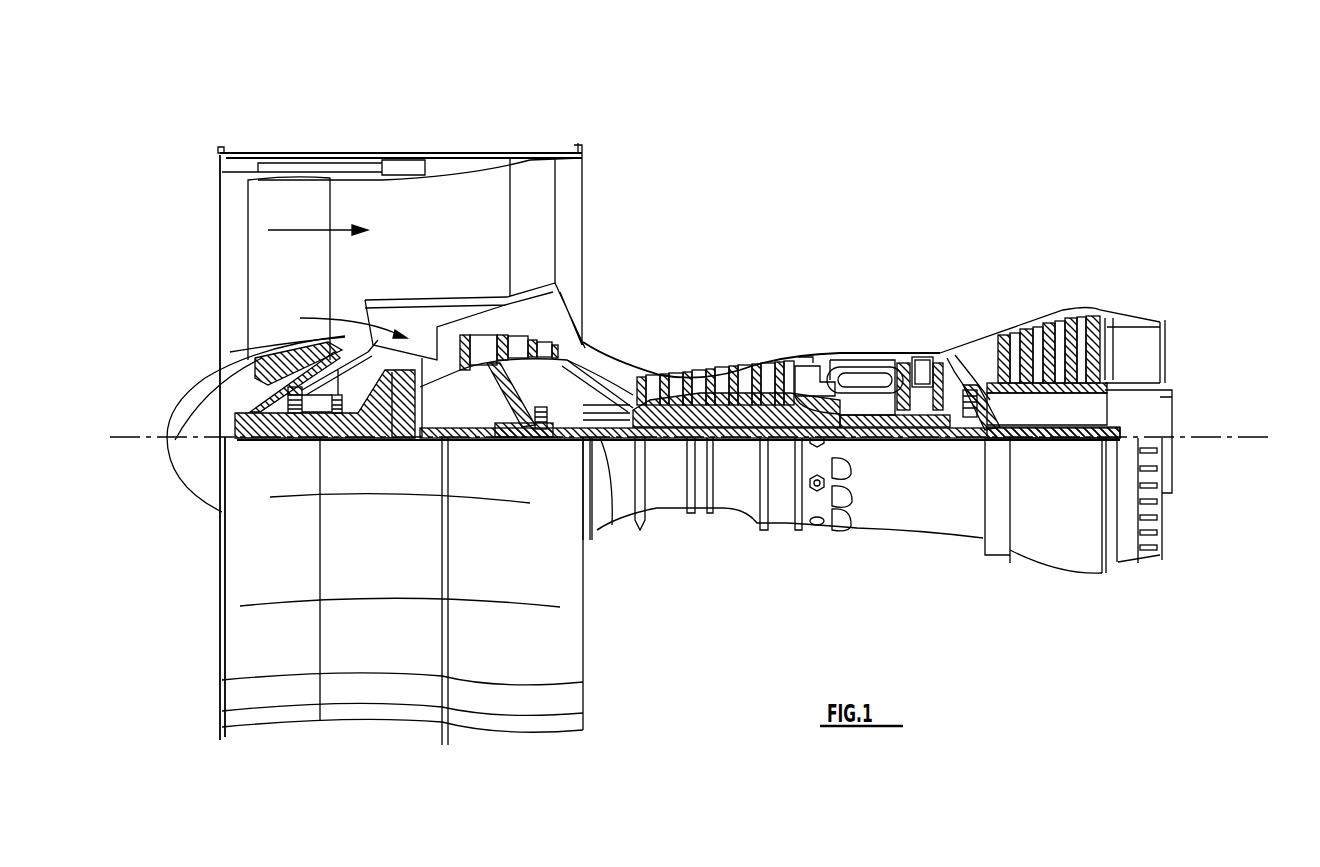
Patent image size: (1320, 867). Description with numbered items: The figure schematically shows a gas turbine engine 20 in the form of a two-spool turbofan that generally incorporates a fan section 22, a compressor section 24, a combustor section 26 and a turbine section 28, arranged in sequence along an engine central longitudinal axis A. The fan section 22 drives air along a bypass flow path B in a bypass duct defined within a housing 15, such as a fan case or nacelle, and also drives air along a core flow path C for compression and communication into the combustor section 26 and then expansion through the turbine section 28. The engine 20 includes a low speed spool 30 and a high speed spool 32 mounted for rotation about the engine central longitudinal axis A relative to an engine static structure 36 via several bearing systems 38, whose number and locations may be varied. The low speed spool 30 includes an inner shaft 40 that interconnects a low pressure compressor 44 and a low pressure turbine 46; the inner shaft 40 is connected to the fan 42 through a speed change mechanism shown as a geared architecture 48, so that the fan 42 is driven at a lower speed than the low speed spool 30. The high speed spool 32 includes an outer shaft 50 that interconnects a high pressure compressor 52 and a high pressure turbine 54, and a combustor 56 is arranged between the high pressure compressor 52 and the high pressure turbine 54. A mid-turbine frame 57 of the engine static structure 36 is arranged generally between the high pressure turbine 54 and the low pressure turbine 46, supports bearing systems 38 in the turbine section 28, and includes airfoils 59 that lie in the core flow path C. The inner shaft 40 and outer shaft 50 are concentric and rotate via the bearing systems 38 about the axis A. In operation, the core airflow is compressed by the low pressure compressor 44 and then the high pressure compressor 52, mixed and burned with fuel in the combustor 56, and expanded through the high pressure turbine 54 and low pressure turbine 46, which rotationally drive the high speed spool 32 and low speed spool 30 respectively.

The gas turbine engine 20 is at (862, 205).
The fan section 22 is at (330, 140).
The housing 15 is at (407, 157).
The fan 42 is at (303, 280).
The compressor section 24 is at (761, 360).
The combustor section 26 is at (896, 350).
The turbine section 28 is at (1056, 403).
The low speed spool 30 is at (740, 456).
The high speed spool 32 is at (785, 370).
The engine static structure 36 is at (780, 541).
The bearing systems 38 is at (540, 437).
The inner shaft 40 is at (605, 530).
The low pressure compressor 44 is at (507, 345).
The low pressure turbine 46 is at (1048, 320).
The geared architecture 48 is at (408, 420).
The outer shaft 50 is at (863, 430).
The high pressure compressor 52 is at (715, 400).
The high pressure turbine 54 is at (923, 357).
The combustor 56 is at (857, 377).
The mid-turbine frame 57 is at (965, 341).
The airfoils 59 is at (963, 373).
The engine central longitudinal axis A is at (1257, 437).
The bypass flow path B is at (305, 225).
The core flow path C is at (346, 319).